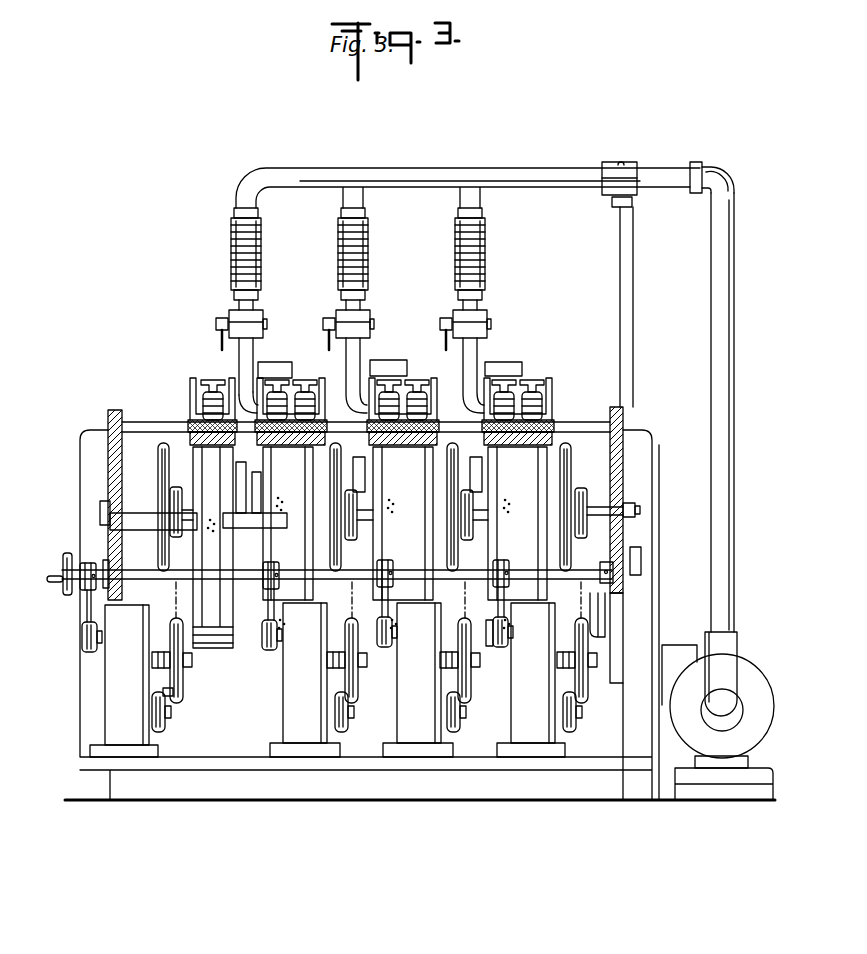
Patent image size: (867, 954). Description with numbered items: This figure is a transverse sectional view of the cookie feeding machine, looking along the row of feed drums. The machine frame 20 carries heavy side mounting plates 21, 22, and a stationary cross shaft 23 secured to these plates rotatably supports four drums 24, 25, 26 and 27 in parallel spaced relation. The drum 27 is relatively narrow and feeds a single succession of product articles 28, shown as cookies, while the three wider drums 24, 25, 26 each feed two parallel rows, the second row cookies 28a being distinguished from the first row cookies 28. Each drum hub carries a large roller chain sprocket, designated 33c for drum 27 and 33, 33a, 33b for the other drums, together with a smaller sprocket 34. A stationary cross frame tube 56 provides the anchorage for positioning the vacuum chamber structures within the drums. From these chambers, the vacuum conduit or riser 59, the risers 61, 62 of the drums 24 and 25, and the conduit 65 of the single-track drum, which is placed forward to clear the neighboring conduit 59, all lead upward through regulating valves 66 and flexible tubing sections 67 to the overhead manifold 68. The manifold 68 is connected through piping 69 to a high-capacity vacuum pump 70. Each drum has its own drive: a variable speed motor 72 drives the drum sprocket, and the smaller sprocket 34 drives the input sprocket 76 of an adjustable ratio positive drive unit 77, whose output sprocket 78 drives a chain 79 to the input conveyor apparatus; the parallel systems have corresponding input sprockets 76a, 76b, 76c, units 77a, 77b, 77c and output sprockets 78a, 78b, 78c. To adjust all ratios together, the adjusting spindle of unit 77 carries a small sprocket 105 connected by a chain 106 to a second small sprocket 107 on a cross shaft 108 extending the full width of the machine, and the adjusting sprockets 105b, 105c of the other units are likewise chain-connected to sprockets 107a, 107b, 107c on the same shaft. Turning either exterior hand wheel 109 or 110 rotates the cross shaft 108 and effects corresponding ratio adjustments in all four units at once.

The machine frame 20 is at (82, 670).
The side mounting plate 21 is at (108, 448).
The side mounting plate 22 is at (624, 417).
The stationary cross shaft 23 is at (614, 508).
The drum 24 is at (553, 440).
The drum 25 is at (436, 440).
The drum 26 is at (323, 440).
The drum 27 is at (192, 440).
The product articles 28 is at (207, 378).
The second row cookies 28a is at (287, 362).
The driven sprocket 33 is at (573, 463).
The large sprocket 33a is at (454, 466).
The large sprocket 33b is at (337, 465).
The roller chain sprocket 33c is at (160, 478).
The smaller sprocket 34 is at (581, 487).
The stationary cross frame tube 56 is at (120, 527).
The vacuum conduit or riser 59 is at (251, 362).
The vacuum supply riser 61 is at (465, 363).
The vacuum supply riser 62 is at (347, 360).
The vacuum conduit 65 is at (241, 360).
The regulating valve 66 is at (256, 324).
The flexible tubing section 67 is at (259, 252).
The overhead manifold 68 is at (321, 178).
The piping 69 is at (738, 177).
The vacuum pump 70 is at (752, 661).
The variable speed motor 72 is at (603, 618).
The input sprocket 76 is at (588, 690).
The input sprocket 76a is at (468, 690).
The input sprocket 76b is at (354, 690).
The input sprocket 76c is at (182, 695).
The adjustable ratio positive drive unit 77 is at (534, 731).
The variable ratio unit 77a is at (421, 731).
The variable ratio unit 77b is at (307, 731).
The variable ratio unit 77c is at (131, 731).
The output sprocket 78 is at (576, 723).
The output sprocket 78a is at (460, 725).
The output sprocket 78b is at (348, 727).
The output sprocket 78c is at (166, 728).
The chain 79 is at (163, 693).
The small sprocket 105 is at (508, 654).
The adjusting sprocket 105b is at (271, 648).
The adjusting sprocket 105c is at (82, 636).
The chain 106 is at (486, 640).
The second small sprocket 107 is at (506, 590).
The sprocket 107a is at (392, 590).
The sprocket 107b is at (276, 590).
The sprocket 107c is at (86, 592).
The cross shaft 108 is at (146, 578).
The hand wheel 109 is at (640, 550).
The hand wheel 110 is at (66, 556).